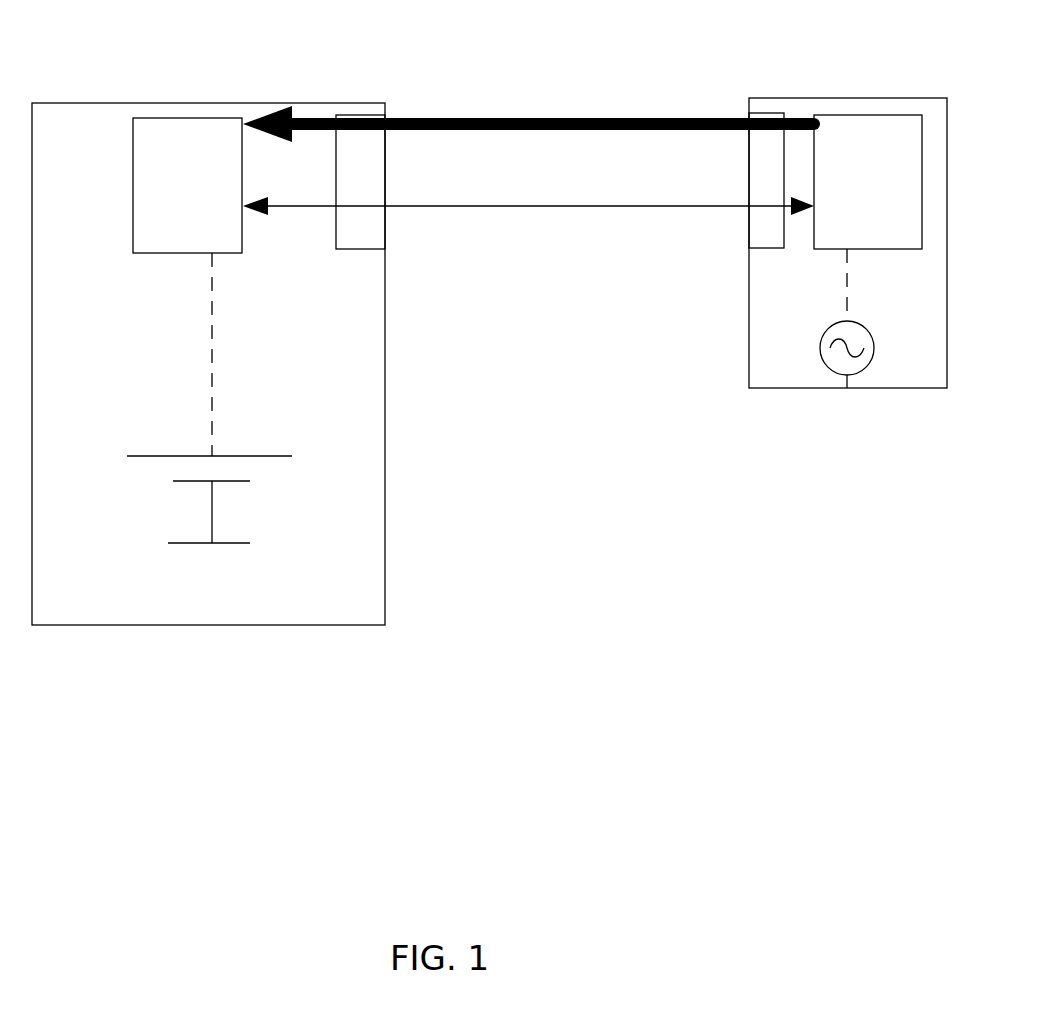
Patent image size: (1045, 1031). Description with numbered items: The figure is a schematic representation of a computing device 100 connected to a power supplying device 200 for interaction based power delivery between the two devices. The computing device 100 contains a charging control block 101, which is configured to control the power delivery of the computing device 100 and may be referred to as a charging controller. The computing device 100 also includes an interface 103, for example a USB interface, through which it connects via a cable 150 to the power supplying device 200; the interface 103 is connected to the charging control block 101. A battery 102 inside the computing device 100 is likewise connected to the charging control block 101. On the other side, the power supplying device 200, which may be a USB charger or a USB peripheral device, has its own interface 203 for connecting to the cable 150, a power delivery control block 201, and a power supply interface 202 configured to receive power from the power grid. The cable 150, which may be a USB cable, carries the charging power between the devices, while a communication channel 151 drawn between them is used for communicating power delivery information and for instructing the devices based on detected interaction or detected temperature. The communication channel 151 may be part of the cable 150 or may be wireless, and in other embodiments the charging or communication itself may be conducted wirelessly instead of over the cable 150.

The computing device 100 is at (206, 103).
The charging control block 101 is at (137, 253).
The battery 102 is at (332, 442).
The interface 103 is at (360, 249).
The cable 150 is at (535, 118).
The communication channel 151 is at (572, 208).
The power supplying device 200 is at (879, 98).
The power delivery control block 201 is at (905, 249).
The power supply interface 202 is at (868, 370).
The interface 203 is at (784, 249).